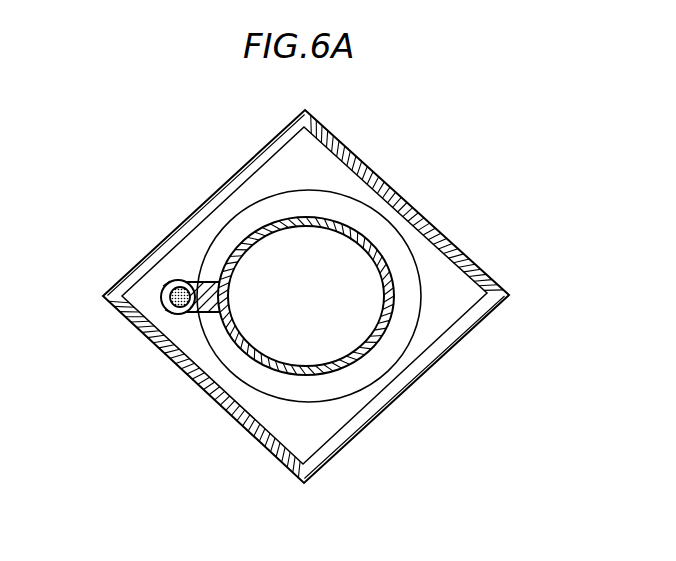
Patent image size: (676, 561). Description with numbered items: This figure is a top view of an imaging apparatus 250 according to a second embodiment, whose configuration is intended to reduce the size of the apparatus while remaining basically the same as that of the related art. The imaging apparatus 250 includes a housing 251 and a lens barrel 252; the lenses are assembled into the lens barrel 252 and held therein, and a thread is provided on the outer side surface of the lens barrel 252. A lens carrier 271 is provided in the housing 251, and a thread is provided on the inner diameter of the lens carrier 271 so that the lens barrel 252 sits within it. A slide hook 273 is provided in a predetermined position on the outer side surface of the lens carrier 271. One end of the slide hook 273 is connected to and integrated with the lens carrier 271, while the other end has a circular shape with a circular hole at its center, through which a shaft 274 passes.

The imaging apparatus 250 is at (328, 284).
The housing 251 is at (458, 247).
The lens barrel 252 is at (355, 320).
The lens carrier 271 is at (346, 395).
The slide hook 273 is at (170, 313).
The shaft 274 is at (167, 287).